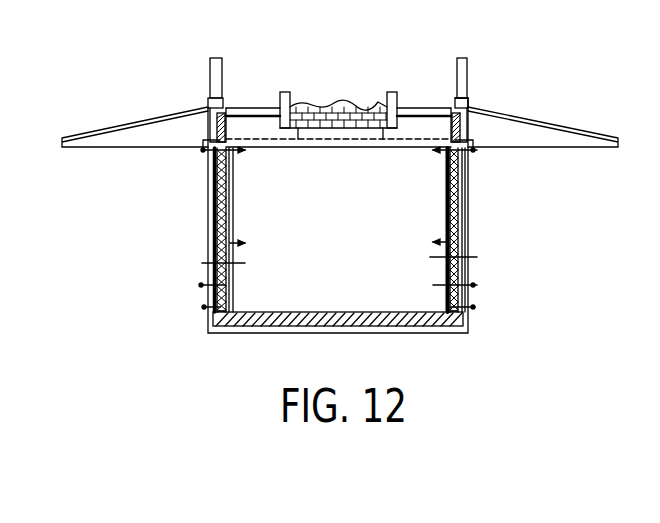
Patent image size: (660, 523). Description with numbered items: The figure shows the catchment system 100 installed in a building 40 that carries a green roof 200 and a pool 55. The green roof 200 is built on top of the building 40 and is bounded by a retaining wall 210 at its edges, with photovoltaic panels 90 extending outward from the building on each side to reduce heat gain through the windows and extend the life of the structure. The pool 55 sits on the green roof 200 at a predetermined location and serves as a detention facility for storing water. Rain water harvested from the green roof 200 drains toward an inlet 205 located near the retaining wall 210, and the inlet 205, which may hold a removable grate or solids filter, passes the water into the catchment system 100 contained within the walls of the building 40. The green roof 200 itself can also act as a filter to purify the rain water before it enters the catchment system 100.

The building 40 is at (182, 219).
The pool 55 is at (334, 105).
The photovoltaic panel 90 is at (147, 120).
The catchment system 100 is at (464, 198).
The green roof 200 is at (250, 106).
The inlet 205 is at (452, 106).
The retaining wall 210 is at (214, 69).